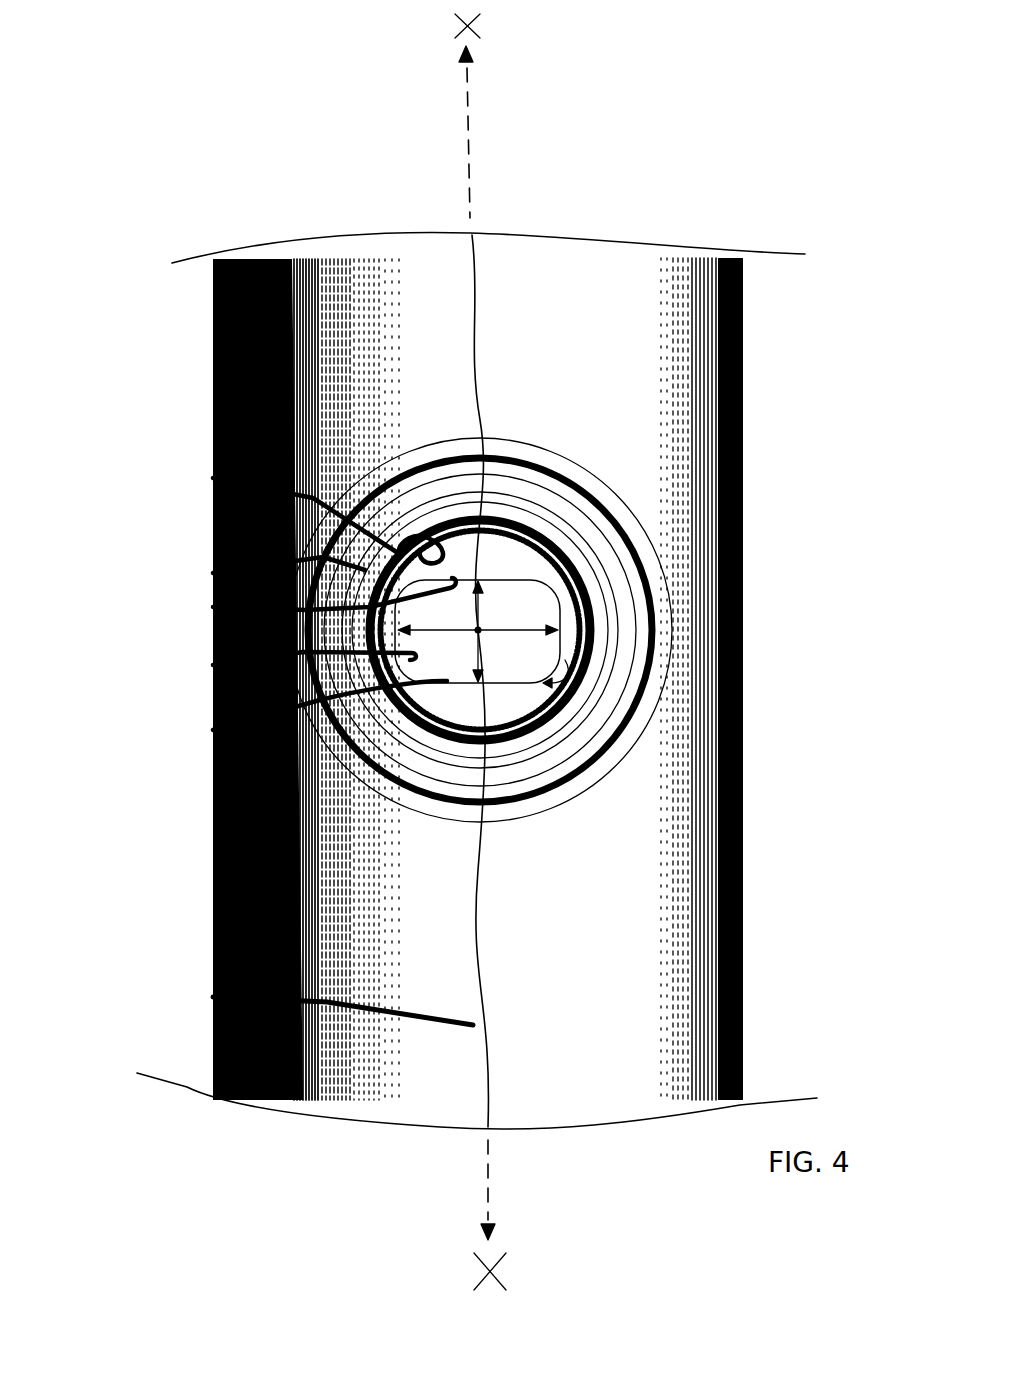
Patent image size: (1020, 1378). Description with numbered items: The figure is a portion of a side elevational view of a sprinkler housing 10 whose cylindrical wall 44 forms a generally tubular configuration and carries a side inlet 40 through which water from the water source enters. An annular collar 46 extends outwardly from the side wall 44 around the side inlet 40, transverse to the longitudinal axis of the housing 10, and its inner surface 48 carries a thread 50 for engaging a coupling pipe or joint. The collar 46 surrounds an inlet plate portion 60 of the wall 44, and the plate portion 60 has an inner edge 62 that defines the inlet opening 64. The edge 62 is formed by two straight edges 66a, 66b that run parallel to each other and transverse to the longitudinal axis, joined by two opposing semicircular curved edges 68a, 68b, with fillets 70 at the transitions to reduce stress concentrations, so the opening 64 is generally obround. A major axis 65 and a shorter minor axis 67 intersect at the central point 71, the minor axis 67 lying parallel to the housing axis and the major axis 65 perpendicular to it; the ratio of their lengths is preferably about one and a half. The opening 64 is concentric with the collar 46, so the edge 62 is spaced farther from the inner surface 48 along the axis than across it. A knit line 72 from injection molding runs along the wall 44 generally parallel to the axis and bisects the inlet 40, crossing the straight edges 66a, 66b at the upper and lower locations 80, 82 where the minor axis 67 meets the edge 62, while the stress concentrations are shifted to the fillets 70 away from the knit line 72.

The housing 10 is at (751, 276).
The side inlet 40 is at (213, 827).
The cylindrical wall 44 is at (700, 950).
The annular collar 46 is at (625, 675).
The inner surface 48 is at (213, 478).
The thread 50 is at (213, 573).
The inlet plate portion 60 is at (743, 413).
The inner edge 62 is at (481, 576).
The inlet opening 64 is at (513, 617).
The major axis 65 is at (478, 622).
The straight edge 66a is at (213, 607).
The straight edge 66b is at (215, 738).
The minor axis 67 is at (489, 631).
The curved edge 68a is at (213, 665).
The curved edge 68b is at (553, 648).
The fillets 70 is at (573, 730).
The central point 71 is at (470, 636).
The knit line 72 is at (213, 997).
The intersection 80 is at (513, 543).
The intersection 82 is at (483, 687).